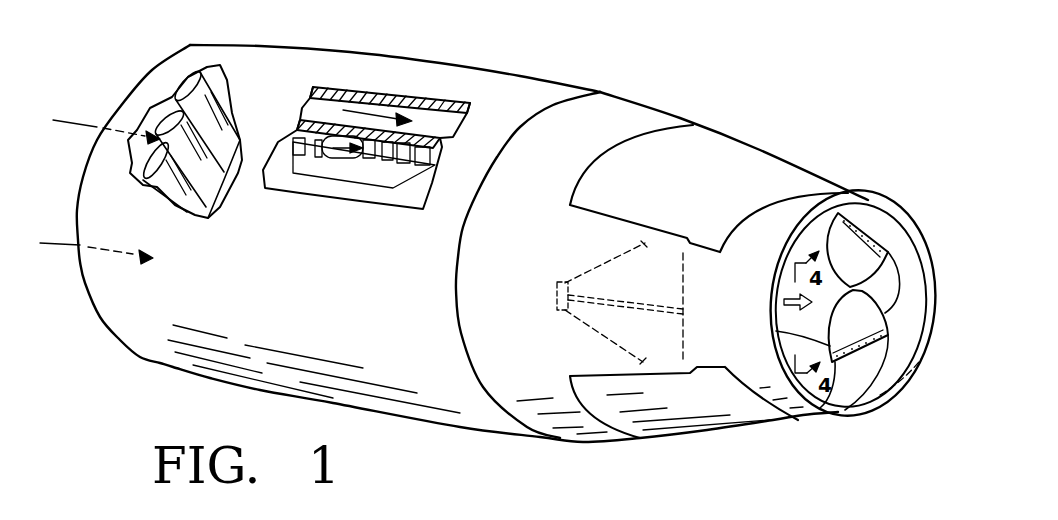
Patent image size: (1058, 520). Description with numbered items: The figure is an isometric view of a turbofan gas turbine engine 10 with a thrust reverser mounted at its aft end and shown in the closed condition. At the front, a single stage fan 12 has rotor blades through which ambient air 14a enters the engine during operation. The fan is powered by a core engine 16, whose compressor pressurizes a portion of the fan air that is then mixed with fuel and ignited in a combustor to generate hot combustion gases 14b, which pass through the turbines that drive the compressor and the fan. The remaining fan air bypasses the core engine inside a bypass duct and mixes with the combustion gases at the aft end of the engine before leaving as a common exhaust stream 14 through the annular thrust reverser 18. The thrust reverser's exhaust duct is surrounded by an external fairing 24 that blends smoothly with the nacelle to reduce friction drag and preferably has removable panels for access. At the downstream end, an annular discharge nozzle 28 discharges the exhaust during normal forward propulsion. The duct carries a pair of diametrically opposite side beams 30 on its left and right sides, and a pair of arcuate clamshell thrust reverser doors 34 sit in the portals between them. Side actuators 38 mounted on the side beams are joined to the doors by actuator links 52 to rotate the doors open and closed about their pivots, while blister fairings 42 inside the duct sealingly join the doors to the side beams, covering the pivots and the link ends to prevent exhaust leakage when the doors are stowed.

The gas turbine engine 10 is at (522, 68).
The single stage fan 12 is at (233, 117).
The common exhaust stream 14 is at (783, 285).
The ambient air 14a is at (77, 124).
The hot combustion gases 14b is at (333, 150).
The core engine 16 is at (357, 204).
The annular thrust reverser 18 is at (670, 106).
The external fairing 24 is at (513, 284).
The discharge nozzle 28 is at (915, 368).
The side beams 30 is at (797, 330).
The thrust reverser doors 34 is at (702, 192).
The side actuators 38 is at (607, 300).
The blister fairings 42 is at (862, 252).
The actuator links 52 is at (603, 263).